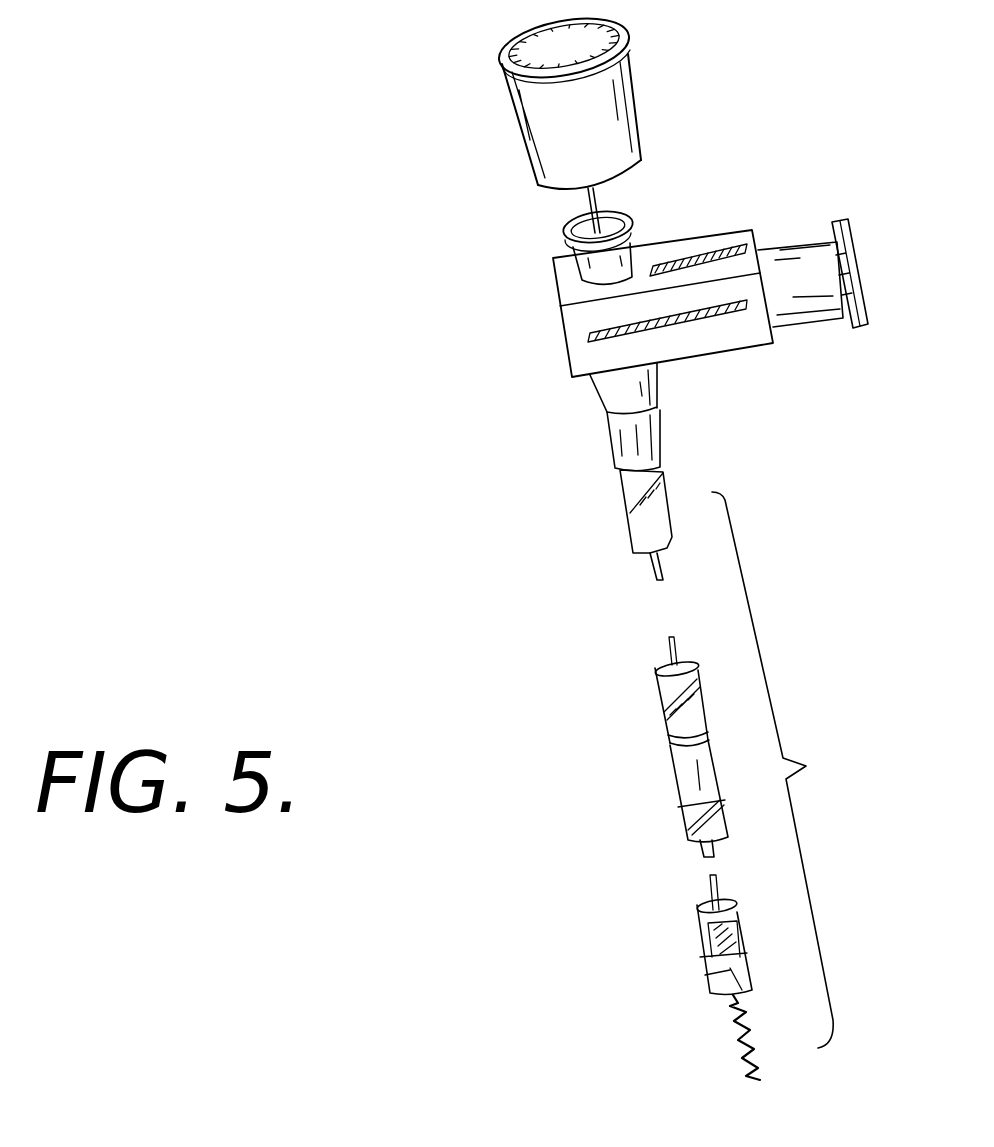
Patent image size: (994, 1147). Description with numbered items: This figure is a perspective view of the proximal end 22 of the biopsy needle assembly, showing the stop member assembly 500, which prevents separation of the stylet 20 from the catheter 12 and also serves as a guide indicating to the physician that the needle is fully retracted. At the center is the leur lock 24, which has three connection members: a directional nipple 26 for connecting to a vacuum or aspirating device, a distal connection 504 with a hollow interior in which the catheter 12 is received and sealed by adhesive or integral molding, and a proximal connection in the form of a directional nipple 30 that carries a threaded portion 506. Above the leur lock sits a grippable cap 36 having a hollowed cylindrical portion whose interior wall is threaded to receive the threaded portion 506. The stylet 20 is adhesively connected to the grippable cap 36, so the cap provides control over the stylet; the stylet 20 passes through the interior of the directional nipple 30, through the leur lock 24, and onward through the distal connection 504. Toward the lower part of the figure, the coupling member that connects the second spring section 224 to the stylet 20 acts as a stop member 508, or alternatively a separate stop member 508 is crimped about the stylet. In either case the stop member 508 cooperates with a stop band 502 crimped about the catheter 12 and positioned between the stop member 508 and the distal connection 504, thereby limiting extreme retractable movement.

The catheter 12 is at (628, 541).
The stylet 20 is at (598, 200).
The proximal end 22 is at (410, 578).
The leur lock 24 is at (463, 316).
The directional nipple 26 is at (853, 242).
The directional nipple 30 is at (525, 198).
The grippable cap 36 is at (617, 110).
The second spring section 224 is at (734, 1050).
The stop member assembly 500 is at (578, 889).
The stop band 502 is at (672, 773).
The distal connection 504 is at (610, 438).
The threaded portion 506 is at (563, 223).
The stop member 508 is at (713, 968).